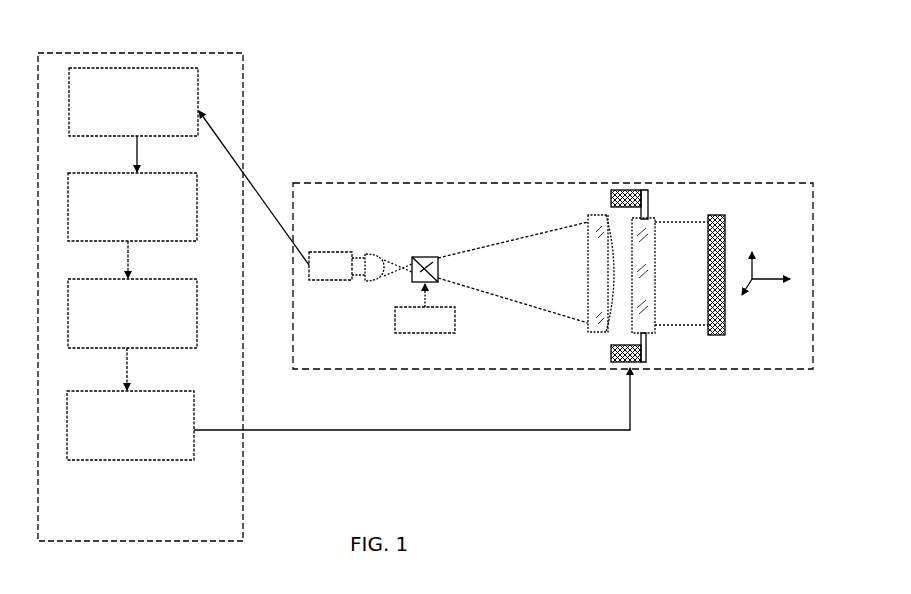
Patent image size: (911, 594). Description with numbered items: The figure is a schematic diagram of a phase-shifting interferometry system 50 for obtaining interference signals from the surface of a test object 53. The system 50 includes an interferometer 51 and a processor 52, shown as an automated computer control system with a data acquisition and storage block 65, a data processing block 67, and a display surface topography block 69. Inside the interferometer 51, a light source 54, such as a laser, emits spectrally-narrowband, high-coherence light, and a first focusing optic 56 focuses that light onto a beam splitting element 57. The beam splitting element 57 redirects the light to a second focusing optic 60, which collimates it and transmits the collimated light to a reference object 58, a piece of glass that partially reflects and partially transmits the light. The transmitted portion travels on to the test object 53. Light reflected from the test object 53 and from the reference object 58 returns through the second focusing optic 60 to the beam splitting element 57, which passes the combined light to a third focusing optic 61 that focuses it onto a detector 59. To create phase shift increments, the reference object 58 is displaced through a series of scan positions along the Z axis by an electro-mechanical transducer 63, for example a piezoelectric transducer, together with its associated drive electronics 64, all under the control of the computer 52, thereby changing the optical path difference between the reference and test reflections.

The phase-shifting interferometry system 50 is at (591, 116).
The interferometer 51 is at (438, 183).
The processor 52 is at (222, 51).
The test object 53 is at (727, 227).
The light source 54 is at (457, 322).
The first focusing optic 56 is at (443, 288).
The beam splitting element 57 is at (424, 257).
The reference object 58 is at (655, 247).
The detector 59 is at (330, 280).
The second focusing optic 60 is at (605, 326).
The third focusing optic 61 is at (372, 282).
The electro-mechanical transducer 63 is at (620, 368).
The drive electronics 64 is at (197, 412).
The data acquisition and storage 65 is at (199, 86).
The data processing 67 is at (198, 205).
The display surface topography 69 is at (198, 305).